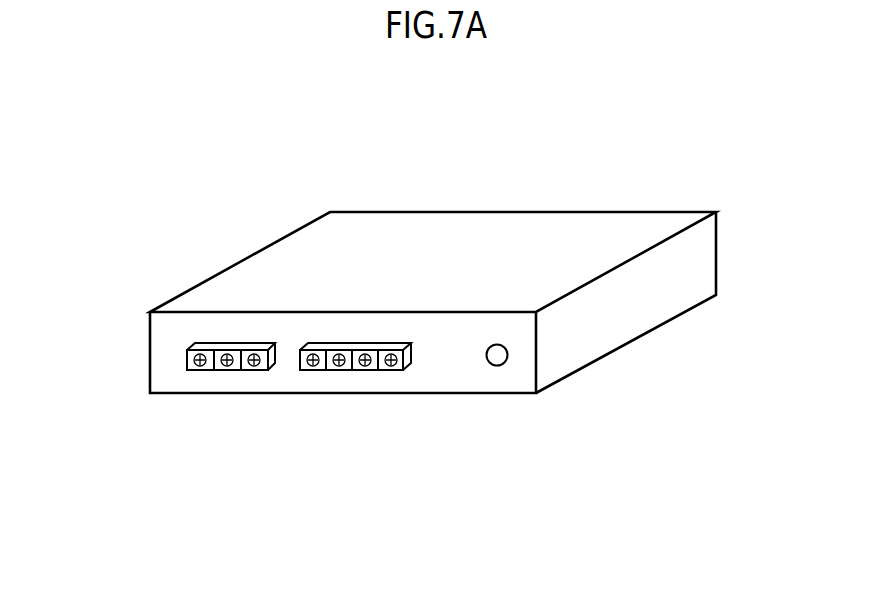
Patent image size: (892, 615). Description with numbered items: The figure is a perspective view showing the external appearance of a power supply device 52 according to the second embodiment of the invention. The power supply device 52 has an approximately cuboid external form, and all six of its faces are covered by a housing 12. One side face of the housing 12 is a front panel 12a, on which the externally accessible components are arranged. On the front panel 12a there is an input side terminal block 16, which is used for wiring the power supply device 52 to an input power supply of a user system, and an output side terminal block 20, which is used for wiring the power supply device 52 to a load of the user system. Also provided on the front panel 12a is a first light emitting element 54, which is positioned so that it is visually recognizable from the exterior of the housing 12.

The housing 12 is at (298, 257).
The front panel 12a is at (173, 337).
The input side terminal block 16 is at (203, 373).
The output side terminal block 20 is at (340, 373).
The power supply device 52 is at (433, 259).
The first light emitting element 54 is at (499, 366).